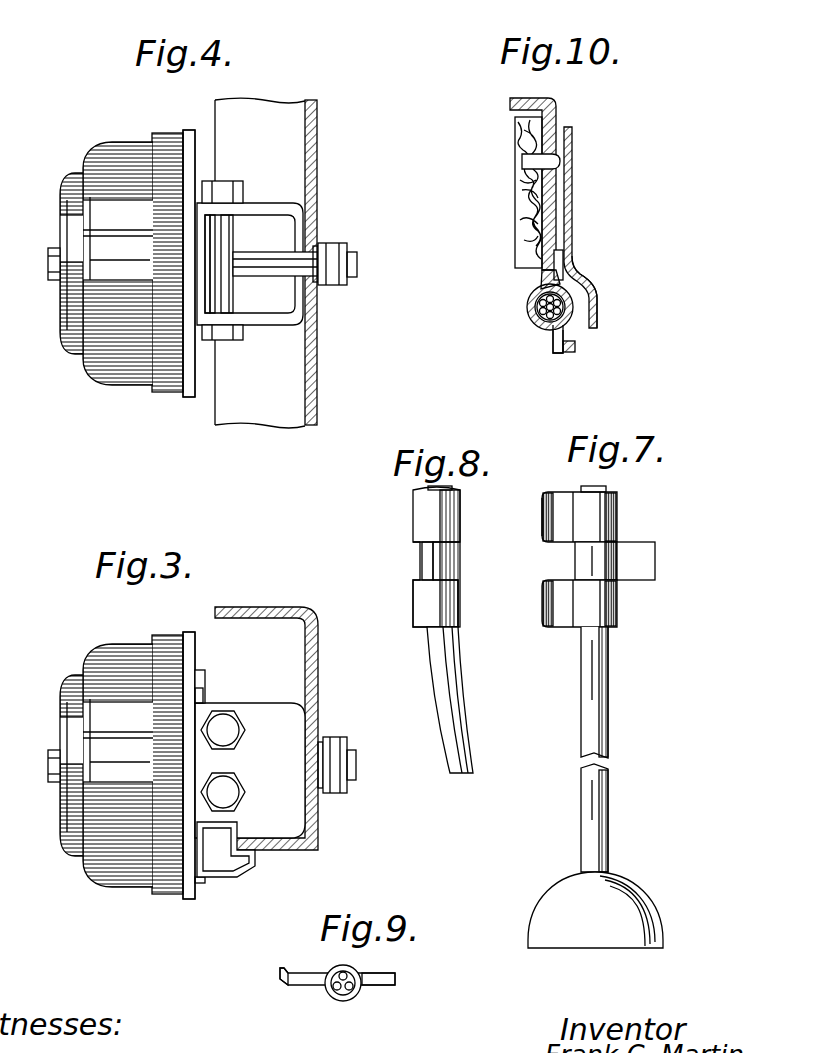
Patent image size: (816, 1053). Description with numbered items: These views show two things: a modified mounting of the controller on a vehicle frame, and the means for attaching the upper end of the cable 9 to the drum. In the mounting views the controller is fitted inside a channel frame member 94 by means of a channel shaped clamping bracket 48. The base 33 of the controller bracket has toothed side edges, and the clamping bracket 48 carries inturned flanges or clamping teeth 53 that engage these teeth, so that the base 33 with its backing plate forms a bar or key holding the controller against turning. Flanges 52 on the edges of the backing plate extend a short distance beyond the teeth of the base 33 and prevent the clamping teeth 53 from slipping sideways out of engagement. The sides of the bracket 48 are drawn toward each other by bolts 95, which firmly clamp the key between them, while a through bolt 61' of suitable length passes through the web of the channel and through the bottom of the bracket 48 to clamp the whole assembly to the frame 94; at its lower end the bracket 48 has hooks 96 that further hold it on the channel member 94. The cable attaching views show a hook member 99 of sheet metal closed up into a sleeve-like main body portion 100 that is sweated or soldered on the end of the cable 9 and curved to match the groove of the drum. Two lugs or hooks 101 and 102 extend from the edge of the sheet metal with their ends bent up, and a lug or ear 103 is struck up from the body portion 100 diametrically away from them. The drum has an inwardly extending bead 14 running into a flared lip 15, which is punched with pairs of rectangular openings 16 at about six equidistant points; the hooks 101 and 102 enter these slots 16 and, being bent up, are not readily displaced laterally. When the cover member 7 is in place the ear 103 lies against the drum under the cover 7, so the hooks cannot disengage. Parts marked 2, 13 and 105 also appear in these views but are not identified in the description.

In FIG. 10, the frame member 2 is at (552, 200).
In FIG. 10, the cover member 7 is at (570, 223).
In FIG. 8, the cable 9 is at (460, 707).
In FIG. 7, the cable 9 is at (610, 710).
In FIG. 10, the packing 13 is at (515, 133).
In FIG. 10, the inwardly extending bead 14 is at (529, 315).
In FIG. 10, the flared lip 15 is at (571, 348).
In FIG. 10, the rectangular openings 16 is at (540, 336).
In FIG. 4, the base 33 is at (197, 280).
In FIG. 3, the base 33 is at (197, 673).
In FIG. 4, the clamping bracket 48 is at (298, 313).
In FIG. 3, the clamping bracket 48 is at (287, 725).
In FIG. 4, the flanges 52 is at (208, 220).
In FIG. 3, the flanges 52 is at (205, 683).
In FIG. 4, the clamping teeth 53 is at (200, 213).
In FIG. 4, the through bolt 61' is at (295, 251).
In FIG. 3, the through bolt 61' is at (356, 765).
In FIG. 3, the channel frame member 94 is at (245, 607).
In FIG. 4, the bolts 95 is at (232, 243).
In FIG. 3, the bolts 95 is at (224, 732).
In FIG. 3, the hooks 96 is at (254, 870).
In FIG. 10, the hook member 99 is at (582, 295).
In FIG. 8, the hook member 99 is at (413, 613).
In FIG. 7, the hook member 99 is at (623, 508).
In FIG. 9, the hook member 99 is at (313, 1003).
In FIG. 10, the main body portion 100 is at (550, 307).
In FIG. 8, the main body portion 100 is at (458, 520).
In FIG. 7, the main body portion 100 is at (613, 530).
In FIG. 9, the main body portion 100 is at (352, 1000).
In FIG. 10, the lug 101 is at (560, 352).
In FIG. 7, the lug 101 is at (547, 533).
In FIG. 9, the lug 101 is at (298, 960).
In FIG. 7, the lug 102 is at (545, 610).
In FIG. 10, the lug or ear 103 is at (560, 260).
In FIG. 8, the lug or ear 103 is at (433, 567).
In FIG. 7, the lug or ear 103 is at (655, 574).
In FIG. 9, the lug or ear 103 is at (388, 975).
In FIG. 7, the knob 105 is at (633, 887).